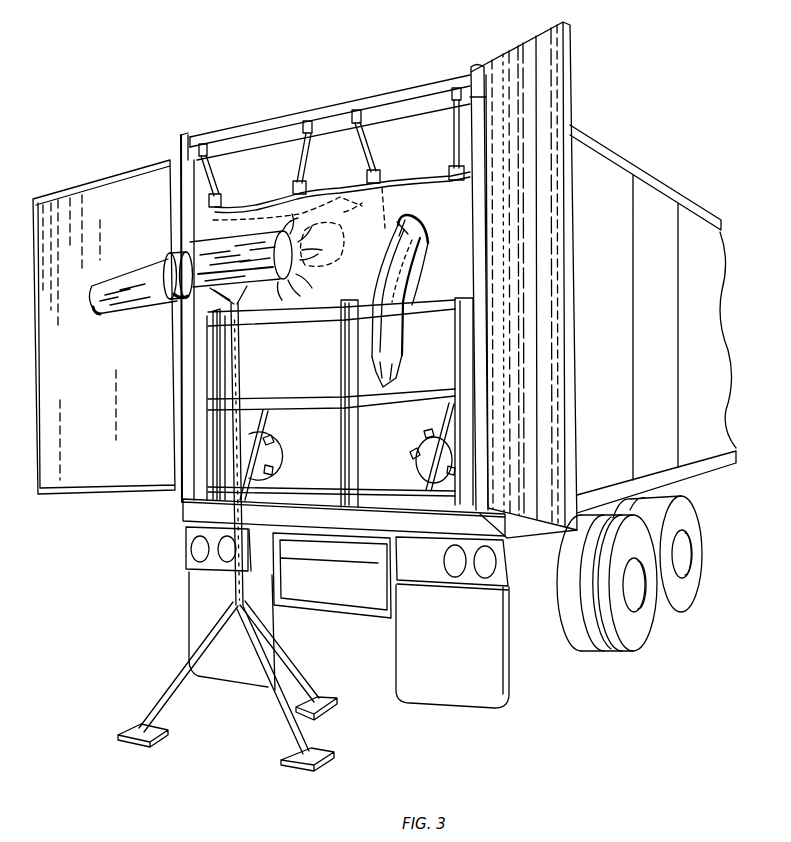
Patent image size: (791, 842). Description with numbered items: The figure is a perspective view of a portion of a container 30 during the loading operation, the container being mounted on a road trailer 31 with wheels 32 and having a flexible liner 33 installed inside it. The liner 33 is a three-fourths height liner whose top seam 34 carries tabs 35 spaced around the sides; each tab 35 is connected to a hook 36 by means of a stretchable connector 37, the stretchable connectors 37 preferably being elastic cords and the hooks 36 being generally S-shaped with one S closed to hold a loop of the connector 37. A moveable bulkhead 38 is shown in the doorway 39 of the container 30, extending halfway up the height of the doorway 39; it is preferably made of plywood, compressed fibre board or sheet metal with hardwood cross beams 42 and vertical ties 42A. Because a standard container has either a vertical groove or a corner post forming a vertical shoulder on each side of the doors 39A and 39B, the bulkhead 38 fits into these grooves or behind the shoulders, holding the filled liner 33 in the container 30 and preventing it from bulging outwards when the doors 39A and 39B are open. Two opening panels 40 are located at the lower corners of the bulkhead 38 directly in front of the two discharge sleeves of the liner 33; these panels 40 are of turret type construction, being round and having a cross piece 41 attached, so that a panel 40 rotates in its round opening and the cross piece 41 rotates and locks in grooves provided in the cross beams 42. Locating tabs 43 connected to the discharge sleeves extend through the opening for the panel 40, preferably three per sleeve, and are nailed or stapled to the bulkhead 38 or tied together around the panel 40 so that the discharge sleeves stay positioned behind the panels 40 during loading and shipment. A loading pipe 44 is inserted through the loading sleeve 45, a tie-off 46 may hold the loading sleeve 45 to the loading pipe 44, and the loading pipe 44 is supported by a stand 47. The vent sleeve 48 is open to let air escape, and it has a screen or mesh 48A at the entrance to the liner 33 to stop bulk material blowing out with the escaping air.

The container 30 is at (655, 200).
The road trailer 31 is at (498, 578).
The wheels 32 is at (699, 586).
The liner 33 is at (346, 284).
The top seam 34 is at (338, 197).
The tabs 35 is at (293, 188).
The hooks 36 is at (194, 135).
The stretchable connector 37 is at (211, 167).
The moveable bulkhead 38 is at (371, 427).
The doorway 39 is at (472, 252).
The door 39A is at (571, 44).
The door 39B is at (82, 182).
The opening panels 40 is at (266, 474).
The cross piece 41 is at (262, 420).
The cross beams 42 is at (445, 310).
The vertical ties 42A is at (341, 371).
The locating tabs 43 is at (272, 447).
The loading pipe 44 is at (128, 308).
The loading sleeve 45 is at (268, 283).
The tie-off 46 is at (241, 251).
The stand 47 is at (177, 697).
The vent sleeve 48 is at (420, 280).
The screen or mesh 48A is at (397, 229).